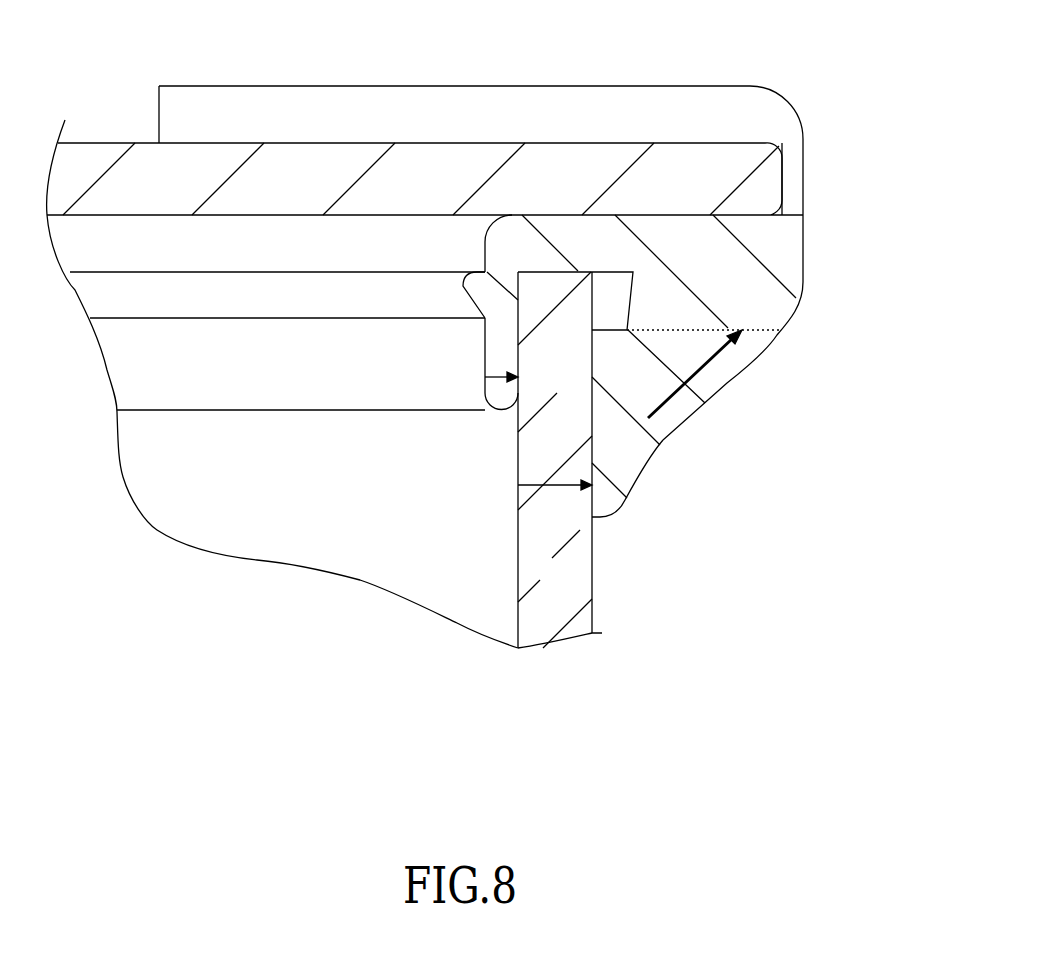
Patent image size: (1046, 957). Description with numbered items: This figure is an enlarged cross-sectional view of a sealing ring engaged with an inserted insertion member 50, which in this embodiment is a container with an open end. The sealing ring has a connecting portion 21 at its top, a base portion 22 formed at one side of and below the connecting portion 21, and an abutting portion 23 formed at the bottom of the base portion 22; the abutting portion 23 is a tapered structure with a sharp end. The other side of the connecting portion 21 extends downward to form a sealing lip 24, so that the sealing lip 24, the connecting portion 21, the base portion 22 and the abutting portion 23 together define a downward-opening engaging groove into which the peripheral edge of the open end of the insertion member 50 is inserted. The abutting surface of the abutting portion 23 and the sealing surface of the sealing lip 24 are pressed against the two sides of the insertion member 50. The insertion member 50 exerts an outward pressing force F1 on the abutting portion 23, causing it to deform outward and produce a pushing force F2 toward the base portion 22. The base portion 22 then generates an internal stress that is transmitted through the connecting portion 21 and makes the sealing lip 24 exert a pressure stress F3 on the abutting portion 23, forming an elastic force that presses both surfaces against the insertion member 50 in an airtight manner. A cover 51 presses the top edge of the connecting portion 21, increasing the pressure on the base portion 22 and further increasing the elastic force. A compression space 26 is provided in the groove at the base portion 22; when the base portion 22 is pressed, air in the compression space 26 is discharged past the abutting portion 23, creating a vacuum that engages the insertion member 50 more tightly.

The connecting portion 21 is at (580, 230).
The base portion 22 is at (770, 258).
The abutting portion 23 is at (640, 455).
The sealing lip 24 is at (497, 342).
The compression space 26 is at (615, 288).
The insertion member 50 is at (577, 557).
The cover 51 is at (123, 172).
The outward pressing force F1 is at (557, 488).
The pushing force F2 is at (707, 367).
The pressure stress F3 is at (505, 375).